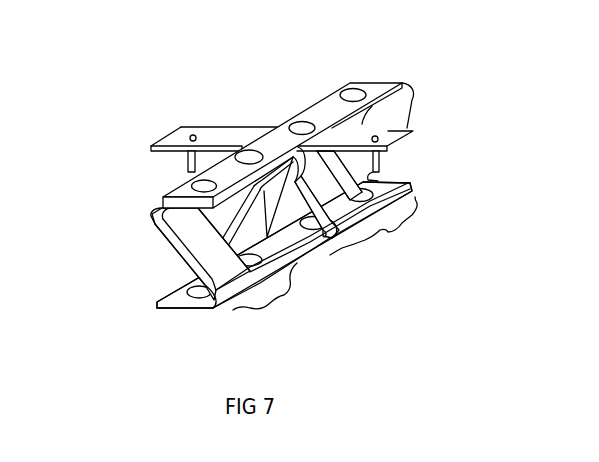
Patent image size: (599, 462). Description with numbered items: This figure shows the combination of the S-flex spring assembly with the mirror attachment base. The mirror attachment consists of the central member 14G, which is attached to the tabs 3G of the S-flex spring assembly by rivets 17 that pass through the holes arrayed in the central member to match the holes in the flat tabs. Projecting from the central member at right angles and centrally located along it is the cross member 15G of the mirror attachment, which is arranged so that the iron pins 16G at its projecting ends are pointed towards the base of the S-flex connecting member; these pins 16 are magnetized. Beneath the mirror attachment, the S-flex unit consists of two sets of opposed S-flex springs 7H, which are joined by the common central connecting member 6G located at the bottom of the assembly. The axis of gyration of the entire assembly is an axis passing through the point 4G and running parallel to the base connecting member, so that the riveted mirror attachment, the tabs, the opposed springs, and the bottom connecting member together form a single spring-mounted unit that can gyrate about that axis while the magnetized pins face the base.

The tabs 3G is at (153, 218).
The point 4G is at (172, 250).
The common central connecting member 6G is at (296, 247).
The S-flex springs 7H is at (326, 260).
The central member 14G is at (328, 105).
The cross member 15G is at (222, 135).
The iron pins 16G is at (186, 167).
The iron pins 16 is at (382, 168).
The rivets 17 is at (361, 91).